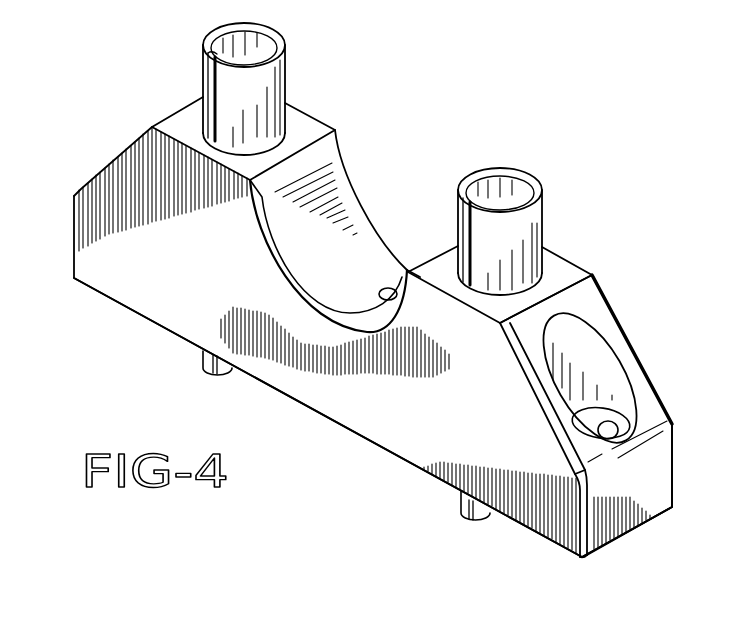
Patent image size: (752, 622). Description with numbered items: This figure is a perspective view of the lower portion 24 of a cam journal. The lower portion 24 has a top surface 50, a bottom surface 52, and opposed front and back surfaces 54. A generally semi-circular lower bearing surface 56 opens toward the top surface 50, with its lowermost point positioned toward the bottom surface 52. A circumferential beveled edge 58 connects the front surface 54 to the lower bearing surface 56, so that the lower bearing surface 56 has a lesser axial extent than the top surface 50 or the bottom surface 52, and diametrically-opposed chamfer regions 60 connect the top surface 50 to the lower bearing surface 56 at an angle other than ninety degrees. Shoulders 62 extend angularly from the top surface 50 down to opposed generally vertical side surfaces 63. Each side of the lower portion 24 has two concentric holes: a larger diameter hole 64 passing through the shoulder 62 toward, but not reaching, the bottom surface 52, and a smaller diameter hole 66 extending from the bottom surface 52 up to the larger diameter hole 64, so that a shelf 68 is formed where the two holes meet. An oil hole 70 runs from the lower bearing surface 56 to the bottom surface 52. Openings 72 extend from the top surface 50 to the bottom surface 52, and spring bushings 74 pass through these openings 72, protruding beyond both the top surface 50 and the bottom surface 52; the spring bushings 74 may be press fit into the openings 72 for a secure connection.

The lower portion 24 is at (103, 237).
The top surface 50 is at (563, 273).
The bottom surface 52 is at (557, 547).
The front and back surfaces 54 is at (378, 423).
The lower bearing surface 56 is at (340, 203).
The circumferential beveled edge 58 is at (267, 242).
The chamfer regions 60 is at (325, 150).
The shoulders 62 is at (592, 307).
The side surfaces 63 is at (625, 510).
The larger diameter hole 64 is at (610, 375).
The smaller diameter hole 66 is at (600, 427).
The shelf 68 is at (622, 432).
The oil hole 70 is at (392, 293).
The openings 72 is at (212, 138).
The spring bushings 74 is at (275, 88).